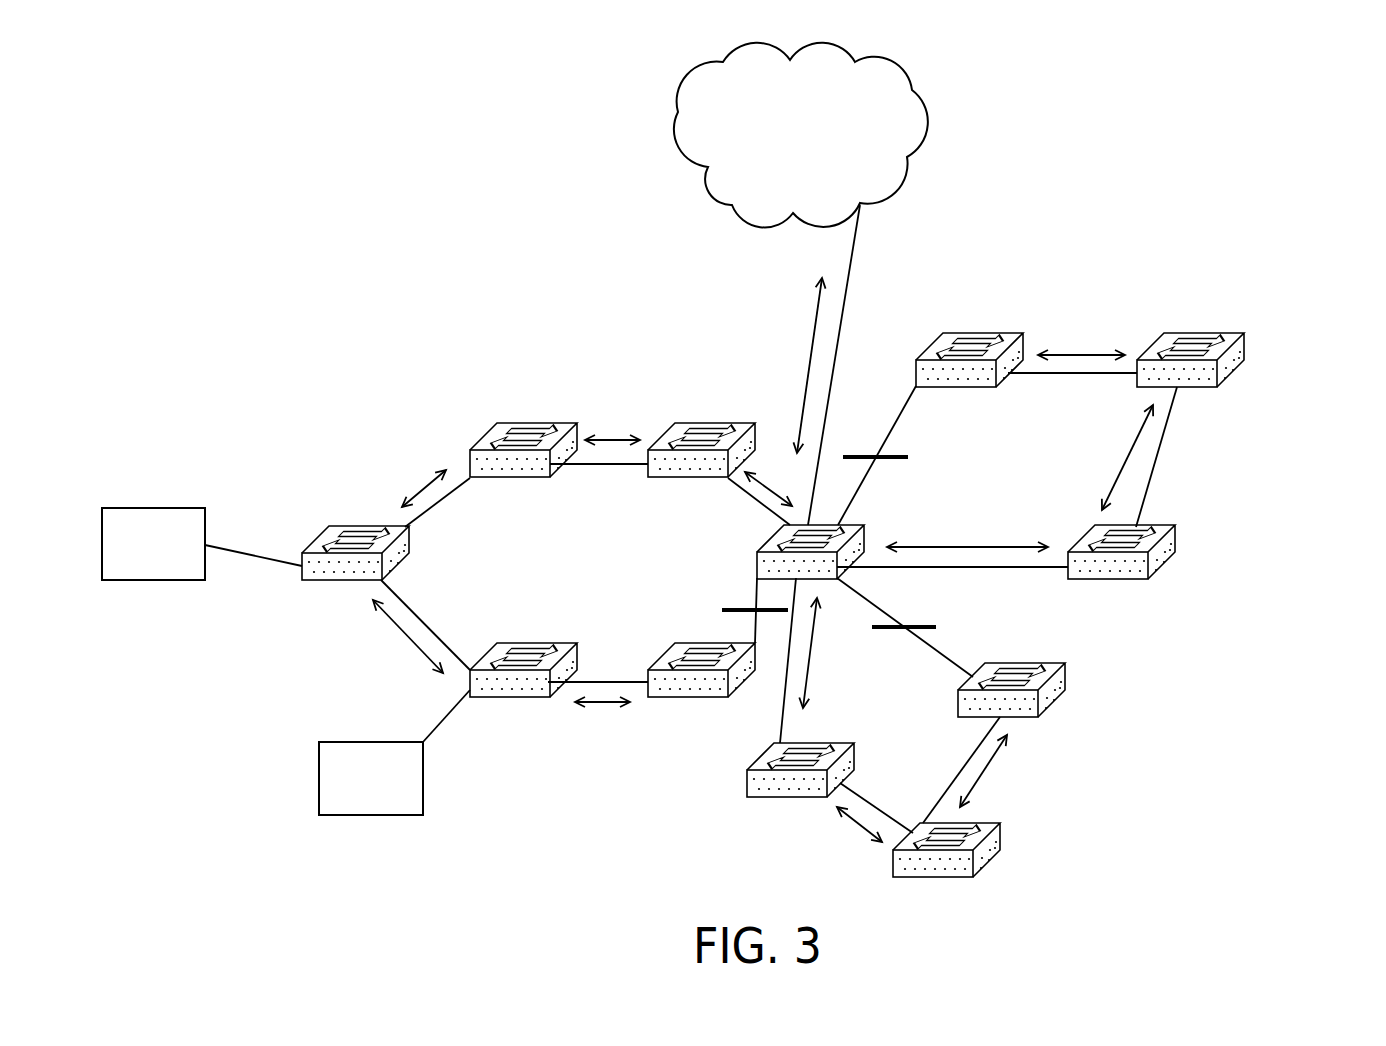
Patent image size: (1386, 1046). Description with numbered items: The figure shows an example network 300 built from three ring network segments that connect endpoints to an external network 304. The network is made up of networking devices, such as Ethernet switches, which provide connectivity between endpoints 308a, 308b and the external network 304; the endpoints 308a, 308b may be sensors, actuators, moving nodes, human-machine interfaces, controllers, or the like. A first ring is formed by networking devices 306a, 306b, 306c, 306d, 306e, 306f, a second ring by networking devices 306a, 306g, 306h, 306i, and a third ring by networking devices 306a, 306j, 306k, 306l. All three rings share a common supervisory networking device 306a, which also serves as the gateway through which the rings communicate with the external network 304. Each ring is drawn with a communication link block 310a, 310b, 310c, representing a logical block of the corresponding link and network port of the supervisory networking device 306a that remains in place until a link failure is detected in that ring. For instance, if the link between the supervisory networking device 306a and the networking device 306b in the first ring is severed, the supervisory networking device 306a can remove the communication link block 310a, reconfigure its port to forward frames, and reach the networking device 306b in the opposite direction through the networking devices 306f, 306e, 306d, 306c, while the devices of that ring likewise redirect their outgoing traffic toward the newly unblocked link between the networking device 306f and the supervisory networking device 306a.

The network 300 is at (1289, 117).
The external network 304 is at (822, 172).
The supervisory networking device 306a is at (863, 525).
The networking device 306b is at (735, 423).
The networking device 306c is at (524, 423).
The networking device 306d is at (372, 527).
The networking device 306e is at (497, 697).
The networking device 306f is at (703, 698).
The networking device 306g is at (757, 797).
The networking device 306h is at (988, 823).
The networking device 306i is at (1035, 663).
The networking device 306j is at (1143, 527).
The networking device 306k is at (1205, 333).
The networking device 306l is at (985, 333).
The endpoint 308a is at (182, 554).
The endpoint 308b is at (400, 789).
The communication link block 310a is at (735, 608).
The communication link block 310b is at (920, 626).
The communication link block 310c is at (898, 455).